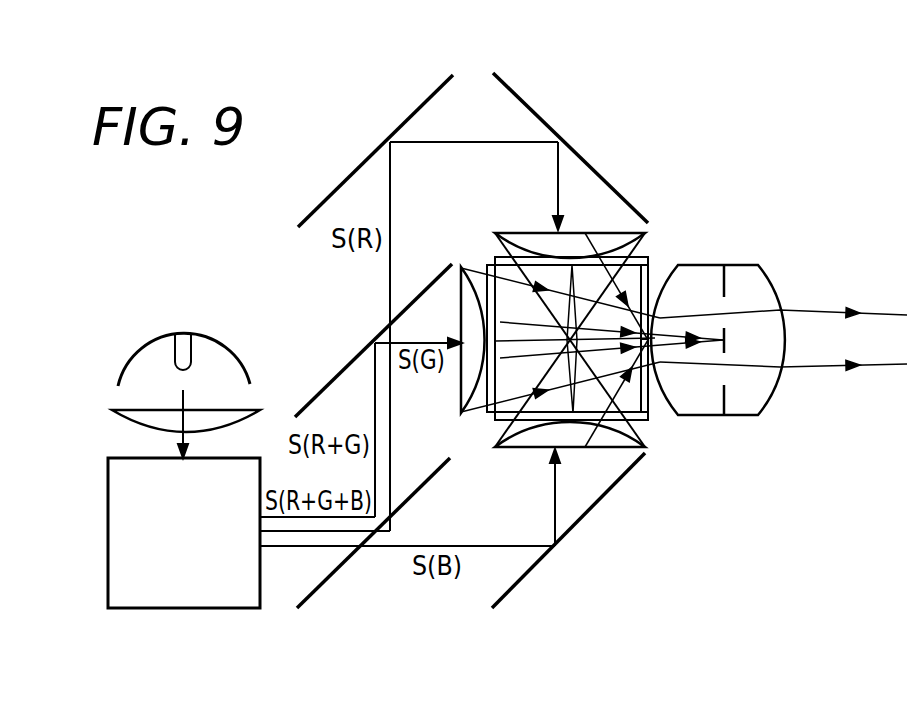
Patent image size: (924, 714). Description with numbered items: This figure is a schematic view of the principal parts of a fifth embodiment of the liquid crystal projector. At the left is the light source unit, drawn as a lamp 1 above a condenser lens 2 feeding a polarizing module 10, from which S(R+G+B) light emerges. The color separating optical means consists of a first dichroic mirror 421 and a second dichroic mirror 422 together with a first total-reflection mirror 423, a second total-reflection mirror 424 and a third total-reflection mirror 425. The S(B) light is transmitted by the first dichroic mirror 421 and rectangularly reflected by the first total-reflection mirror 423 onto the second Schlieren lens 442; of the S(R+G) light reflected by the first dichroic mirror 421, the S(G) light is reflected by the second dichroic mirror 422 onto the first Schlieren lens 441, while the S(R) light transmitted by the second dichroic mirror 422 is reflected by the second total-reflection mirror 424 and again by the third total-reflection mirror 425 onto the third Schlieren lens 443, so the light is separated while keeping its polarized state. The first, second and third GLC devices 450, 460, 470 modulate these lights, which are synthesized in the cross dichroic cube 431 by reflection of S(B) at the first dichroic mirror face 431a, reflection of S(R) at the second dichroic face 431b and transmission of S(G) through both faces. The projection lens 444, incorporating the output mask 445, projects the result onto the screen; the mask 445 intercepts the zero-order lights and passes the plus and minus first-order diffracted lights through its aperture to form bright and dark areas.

The light source lamp 1 is at (133, 356).
The condenser lens 2 is at (118, 413).
The illumination unit 10 is at (225, 610).
The first dichroic mirror 421 is at (318, 590).
The second dichroic mirror 422 is at (306, 400).
The first total-reflection mirror 423 is at (537, 568).
The second total-reflection mirror 424 is at (425, 100).
The third total-reflection mirror 425 is at (533, 108).
The cross dichroic cube 431 is at (655, 262).
The first dichroic mirror face 431a is at (640, 255).
The second dichroic face 431b is at (655, 410).
The first Schlieren lens 441 is at (461, 414).
The second Schlieren lens 442 is at (605, 443).
The third Schlieren lens 443 is at (602, 230).
The projection lens 444 is at (773, 400).
The output mask 445 is at (730, 282).
The first GLC device 450 is at (479, 262).
The second GLC device 460 is at (650, 425).
The third GLC device 470 is at (618, 250).